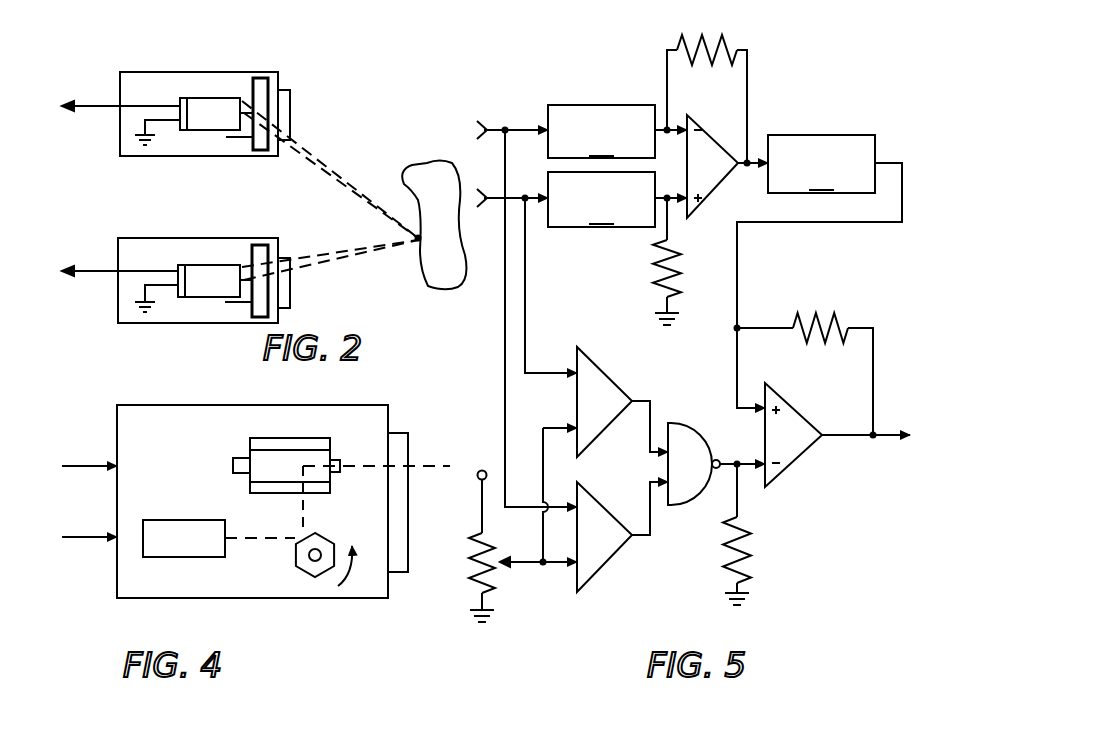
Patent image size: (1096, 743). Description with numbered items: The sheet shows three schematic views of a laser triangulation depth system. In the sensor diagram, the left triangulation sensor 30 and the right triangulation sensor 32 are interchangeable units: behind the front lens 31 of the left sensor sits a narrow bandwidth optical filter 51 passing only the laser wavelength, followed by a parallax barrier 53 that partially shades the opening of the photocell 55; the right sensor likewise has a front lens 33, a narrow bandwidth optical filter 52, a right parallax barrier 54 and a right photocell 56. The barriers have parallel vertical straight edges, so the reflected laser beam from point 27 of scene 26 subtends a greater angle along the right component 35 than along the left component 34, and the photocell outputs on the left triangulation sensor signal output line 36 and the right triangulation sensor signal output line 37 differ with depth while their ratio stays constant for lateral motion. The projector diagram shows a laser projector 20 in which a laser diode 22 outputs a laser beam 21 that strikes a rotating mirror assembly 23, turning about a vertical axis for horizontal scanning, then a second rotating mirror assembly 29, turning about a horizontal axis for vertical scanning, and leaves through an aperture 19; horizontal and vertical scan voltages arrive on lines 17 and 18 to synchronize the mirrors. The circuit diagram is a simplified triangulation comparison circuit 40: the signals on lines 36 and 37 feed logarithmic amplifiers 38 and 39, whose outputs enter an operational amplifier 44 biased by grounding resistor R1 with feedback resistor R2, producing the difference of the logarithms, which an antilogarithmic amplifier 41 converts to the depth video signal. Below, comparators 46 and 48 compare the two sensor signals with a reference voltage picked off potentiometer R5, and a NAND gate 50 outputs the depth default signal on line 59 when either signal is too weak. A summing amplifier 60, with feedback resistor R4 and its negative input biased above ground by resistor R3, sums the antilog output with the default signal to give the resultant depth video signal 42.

In FIG. 4, the horizontal scan voltage input line 17 is at (95, 462).
In FIG. 4, the vertical scan voltage input line 18 is at (94, 534).
In FIG. 4, the aperture 19 is at (402, 433).
In FIG. 4, the laser projector 20 is at (205, 405).
In FIG. 4, the laser beam 21 is at (440, 456).
In FIG. 4, the laser diode 22 is at (192, 520).
In FIG. 4, the rotating mirror assembly 23 is at (294, 571).
In FIG. 2, the scene 26 is at (403, 184).
In FIG. 2, the point 27 is at (435, 237).
In FIG. 4, the second rotating mirror assembly 29 is at (250, 450).
In FIG. 2, the left triangulation sensor 30 is at (160, 48).
In FIG. 2, the front lens 31 is at (290, 90).
In FIG. 2, the right triangulation sensor 32 is at (163, 216).
In FIG. 2, the front lens 33 is at (290, 258).
In FIG. 2, the left component of the reflected laser beam 34 is at (360, 160).
In FIG. 2, the right component of the reflected laser beam 35 is at (321, 254).
In FIG. 2, the left triangulation sensor signal output line 36 is at (115, 106).
In FIG. 5, the left triangulation sensor signal output line 36 is at (510, 108).
In FIG. 2, the right triangulation sensor signal output line 37 is at (109, 271).
In FIG. 5, the right triangulation sensor signal output line 37 is at (497, 190).
In FIG. 5, the logarithmic amplifier 38 is at (601, 131).
In FIG. 5, the logarithmic amplifier 39 is at (601, 199).
In FIG. 5, the triangulation comparison circuit 40 is at (595, 79).
In FIG. 5, the antilogarithmic amplifier 41 is at (821, 164).
In FIG. 5, the depth video signal 42 is at (893, 427).
In FIG. 5, the operational amplifier 44 is at (722, 116).
In FIG. 5, the comparator 46 is at (635, 375).
In FIG. 5, the comparator 48 is at (633, 488).
In FIG. 5, the NAND gate 50 is at (714, 414).
In FIG. 2, the narrow bandwidth optical filter 51 is at (260, 78).
In FIG. 2, the narrow bandwidth optical filter 52 is at (260, 245).
In FIG. 2, the parallax barrier 53 is at (236, 138).
In FIG. 2, the right parallax barrier 54 is at (224, 302).
In FIG. 2, the photocell 55 is at (201, 98).
In FIG. 2, the right photocell 56 is at (202, 265).
In FIG. 5, the depth default signal line 59 is at (733, 454).
In FIG. 5, the summing amplifier 60 is at (807, 422).
In FIG. 5, the grounding resistor R1 is at (643, 261).
In FIG. 5, the feedback resistor R2 is at (707, 87).
In FIG. 5, the resistor R3 is at (760, 534).
In FIG. 5, the feedback resistor R4 is at (805, 362).
In FIG. 5, the potentiometer R5 is at (462, 547).